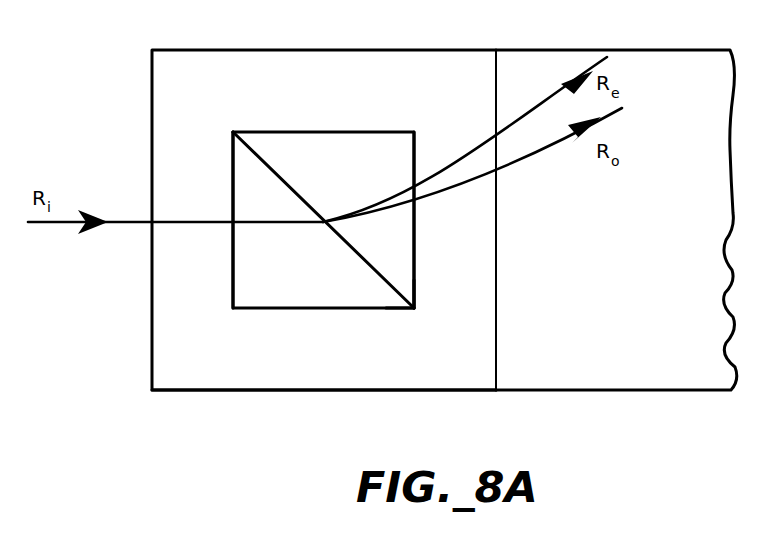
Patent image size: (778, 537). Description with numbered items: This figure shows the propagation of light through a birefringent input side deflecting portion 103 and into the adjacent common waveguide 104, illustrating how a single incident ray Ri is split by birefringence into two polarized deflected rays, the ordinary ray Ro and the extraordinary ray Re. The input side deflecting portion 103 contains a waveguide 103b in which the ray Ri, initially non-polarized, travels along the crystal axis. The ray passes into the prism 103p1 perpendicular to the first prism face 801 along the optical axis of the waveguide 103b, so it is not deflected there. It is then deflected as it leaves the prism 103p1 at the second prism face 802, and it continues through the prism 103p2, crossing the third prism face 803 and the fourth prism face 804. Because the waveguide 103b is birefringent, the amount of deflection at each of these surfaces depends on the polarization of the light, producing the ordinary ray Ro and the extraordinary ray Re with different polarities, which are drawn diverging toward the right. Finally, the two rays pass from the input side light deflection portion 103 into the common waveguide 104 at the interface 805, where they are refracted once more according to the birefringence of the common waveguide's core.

The input side deflecting portion 103 is at (450, 68).
The common waveguide 104 is at (645, 68).
The prism 103p1 is at (247, 167).
The prism 103p2 is at (338, 152).
The waveguide 103b is at (391, 370).
The first prism face 801 is at (240, 297).
The second prism face 802 is at (361, 259).
The third prism face 803 is at (404, 292).
The fourth prism face 804 is at (417, 249).
The interface 805 is at (497, 368).